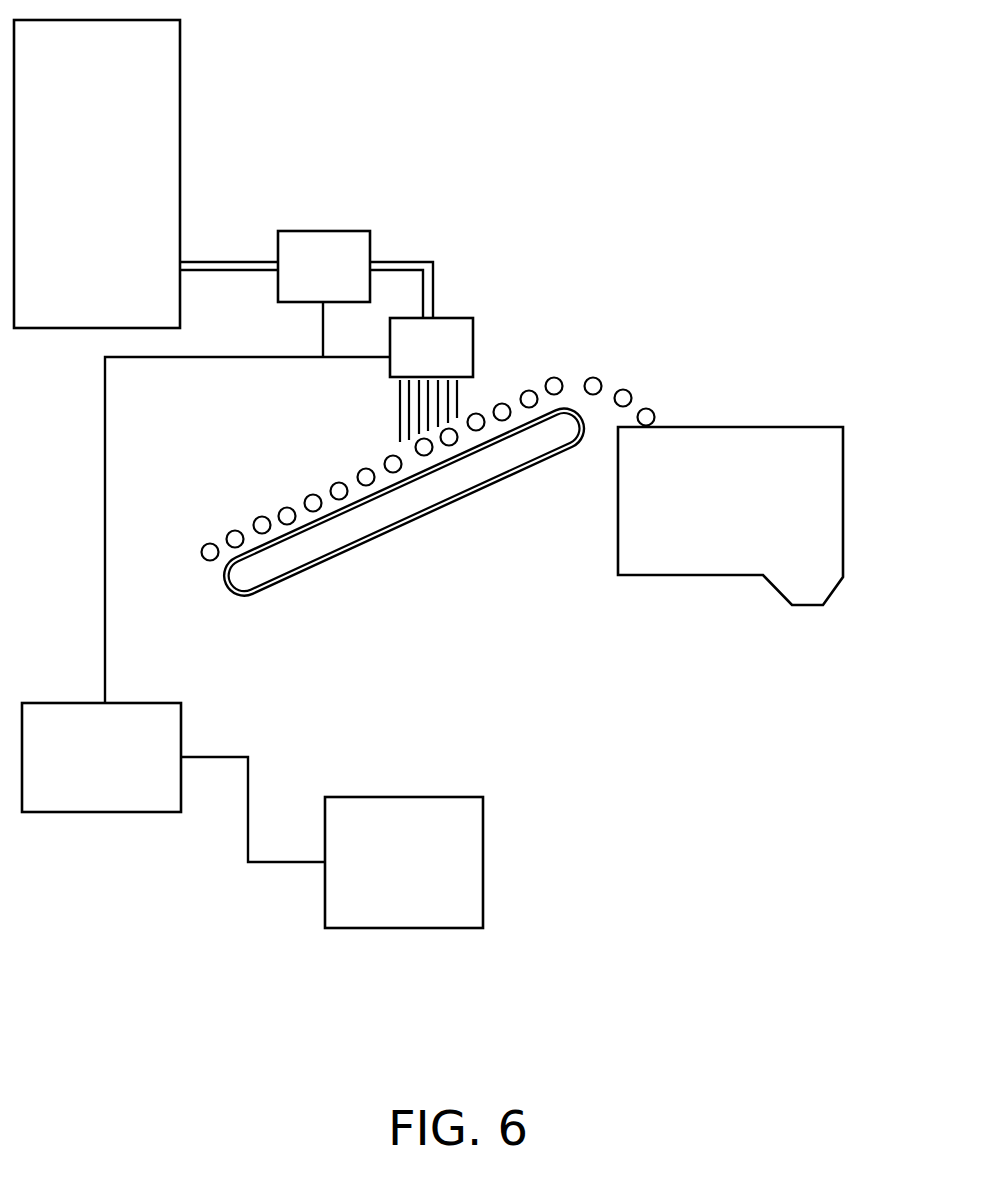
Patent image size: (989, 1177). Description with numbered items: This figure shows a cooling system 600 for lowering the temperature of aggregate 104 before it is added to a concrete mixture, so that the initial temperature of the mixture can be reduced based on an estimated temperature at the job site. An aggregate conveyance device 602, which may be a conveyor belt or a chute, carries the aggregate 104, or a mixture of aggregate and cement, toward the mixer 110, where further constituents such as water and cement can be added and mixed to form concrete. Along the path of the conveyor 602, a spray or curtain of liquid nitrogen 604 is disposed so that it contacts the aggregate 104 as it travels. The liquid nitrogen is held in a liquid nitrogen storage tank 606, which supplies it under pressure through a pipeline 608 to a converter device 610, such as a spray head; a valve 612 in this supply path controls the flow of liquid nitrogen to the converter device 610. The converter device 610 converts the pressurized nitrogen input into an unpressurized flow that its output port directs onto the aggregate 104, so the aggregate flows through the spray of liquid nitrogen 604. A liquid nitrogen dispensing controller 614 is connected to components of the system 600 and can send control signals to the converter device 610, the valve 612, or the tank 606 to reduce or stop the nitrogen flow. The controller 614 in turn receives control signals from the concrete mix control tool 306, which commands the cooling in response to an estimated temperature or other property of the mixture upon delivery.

The cooling system 600 is at (766, 282).
The liquid nitrogen storage tank 606 is at (76, 245).
The pipeline 608 is at (238, 262).
The valve 612 is at (303, 294).
The converter device 610 is at (410, 358).
The liquid nitrogen 604 is at (486, 388).
The aggregate conveyance device 602 is at (403, 548).
The aggregate 104 is at (267, 490).
The mixer 110 is at (717, 524).
The liquid nitrogen dispensing controller 614 is at (81, 785).
The concrete mix control tool 306 is at (383, 918).